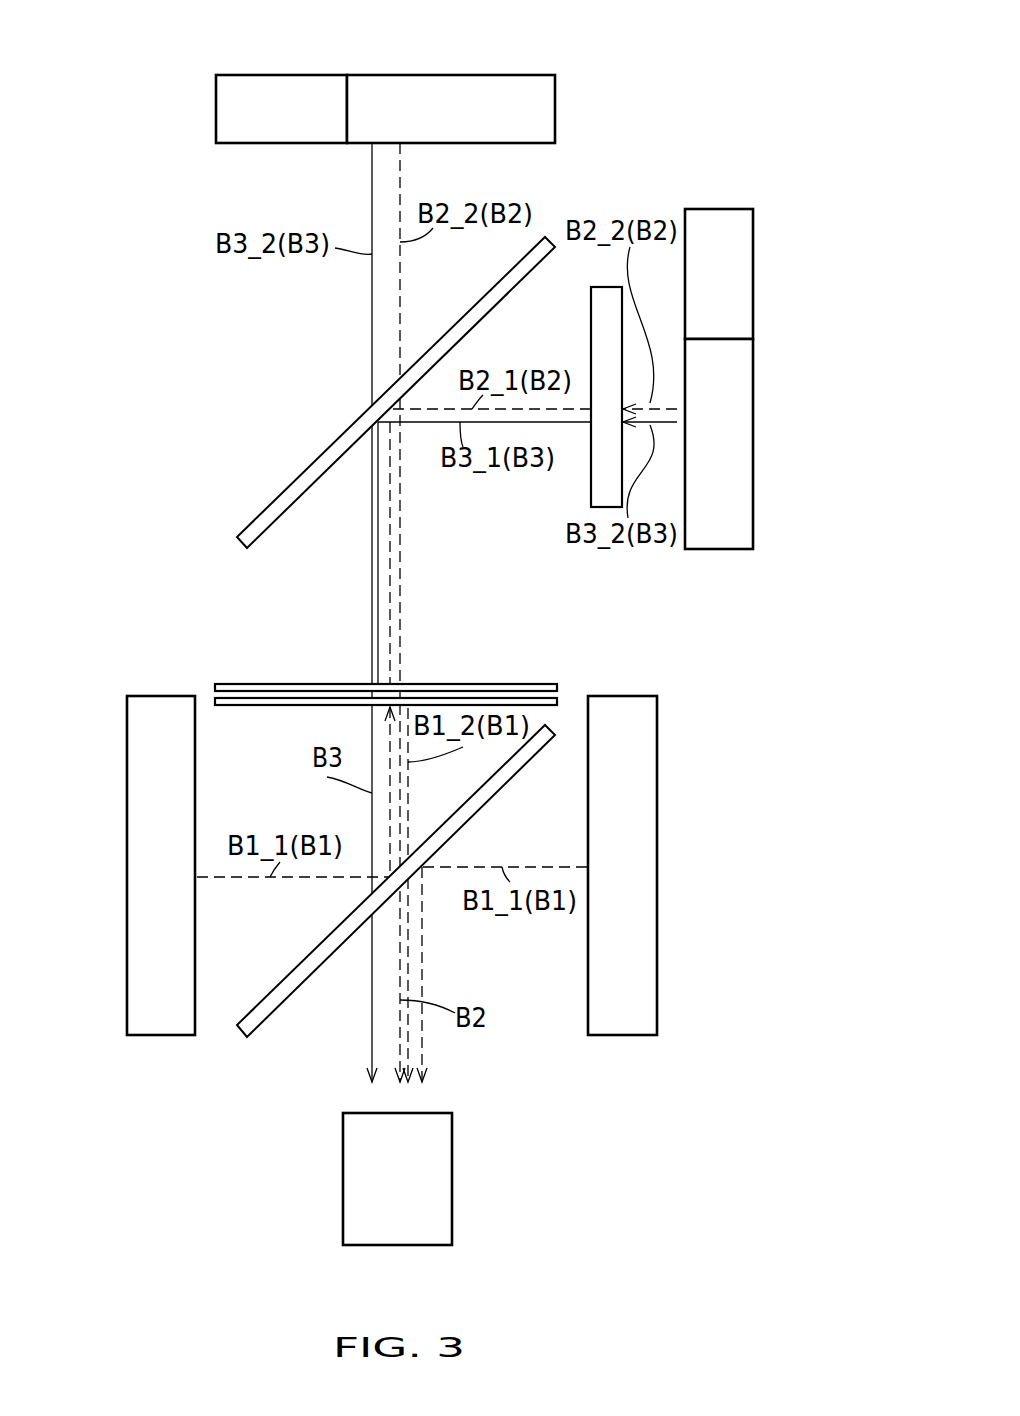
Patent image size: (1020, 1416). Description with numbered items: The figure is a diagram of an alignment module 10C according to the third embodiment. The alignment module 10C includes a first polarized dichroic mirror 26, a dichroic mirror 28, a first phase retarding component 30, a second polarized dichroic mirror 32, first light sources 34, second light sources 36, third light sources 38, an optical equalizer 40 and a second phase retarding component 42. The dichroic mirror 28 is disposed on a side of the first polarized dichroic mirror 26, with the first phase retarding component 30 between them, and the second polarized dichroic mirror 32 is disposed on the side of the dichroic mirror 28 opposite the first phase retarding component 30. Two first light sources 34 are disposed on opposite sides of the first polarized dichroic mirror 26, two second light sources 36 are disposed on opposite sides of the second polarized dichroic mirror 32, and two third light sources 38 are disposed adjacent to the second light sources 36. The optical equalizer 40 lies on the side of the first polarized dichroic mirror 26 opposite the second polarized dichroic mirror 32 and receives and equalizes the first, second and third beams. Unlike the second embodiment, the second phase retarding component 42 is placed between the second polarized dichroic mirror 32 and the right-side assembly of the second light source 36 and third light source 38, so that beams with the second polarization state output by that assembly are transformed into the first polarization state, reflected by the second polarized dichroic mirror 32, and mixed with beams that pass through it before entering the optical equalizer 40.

The alignment module 10C is at (728, 62).
The first polarized dichroic mirror 26 is at (290, 997).
The dichroic mirror 28 is at (557, 686).
The first phase retarding component 30 is at (557, 700).
The second polarized dichroic mirror 32 is at (278, 495).
The first light source 34 is at (127, 916).
The second light source 36 is at (282, 75).
The third light source 38 is at (473, 75).
The optical equalizer 40 is at (453, 1185).
The second phase retarding component 42 is at (591, 327).